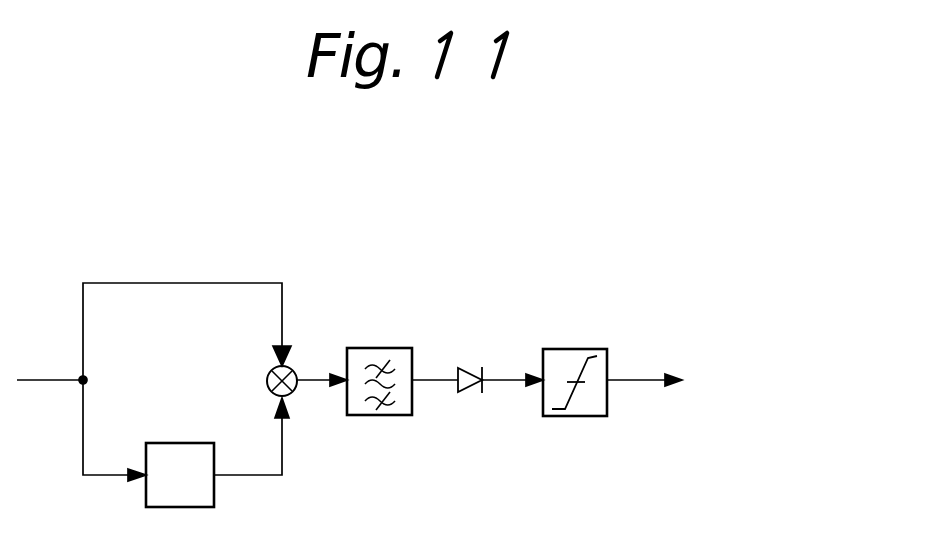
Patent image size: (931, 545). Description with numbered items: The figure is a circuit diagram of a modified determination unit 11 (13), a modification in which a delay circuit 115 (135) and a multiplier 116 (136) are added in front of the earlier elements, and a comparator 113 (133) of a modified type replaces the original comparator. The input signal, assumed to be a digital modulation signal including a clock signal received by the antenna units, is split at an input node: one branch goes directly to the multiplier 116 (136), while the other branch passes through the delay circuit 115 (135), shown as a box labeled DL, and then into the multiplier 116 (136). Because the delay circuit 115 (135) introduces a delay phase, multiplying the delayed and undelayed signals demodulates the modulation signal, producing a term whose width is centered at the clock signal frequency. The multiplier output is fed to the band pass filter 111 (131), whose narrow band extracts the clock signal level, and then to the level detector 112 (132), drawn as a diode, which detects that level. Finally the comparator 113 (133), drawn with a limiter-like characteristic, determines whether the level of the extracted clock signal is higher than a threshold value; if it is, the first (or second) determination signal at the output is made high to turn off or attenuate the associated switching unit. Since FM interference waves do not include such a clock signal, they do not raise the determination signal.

The determination unit 11 is at (448, 305).
The determination unit 13 is at (448, 305).
The band pass filter 111 is at (412, 347).
The band pass filter 131 is at (398, 347).
The level detector 112 is at (520, 320).
The level detector 132 is at (477, 367).
The comparator 113 is at (649, 328).
The comparator 133 is at (649, 328).
The delay circuit 115 is at (204, 443).
The delay circuit 135 is at (182, 443).
The multiplier 116 is at (334, 321).
The multiplier 136 is at (292, 368).